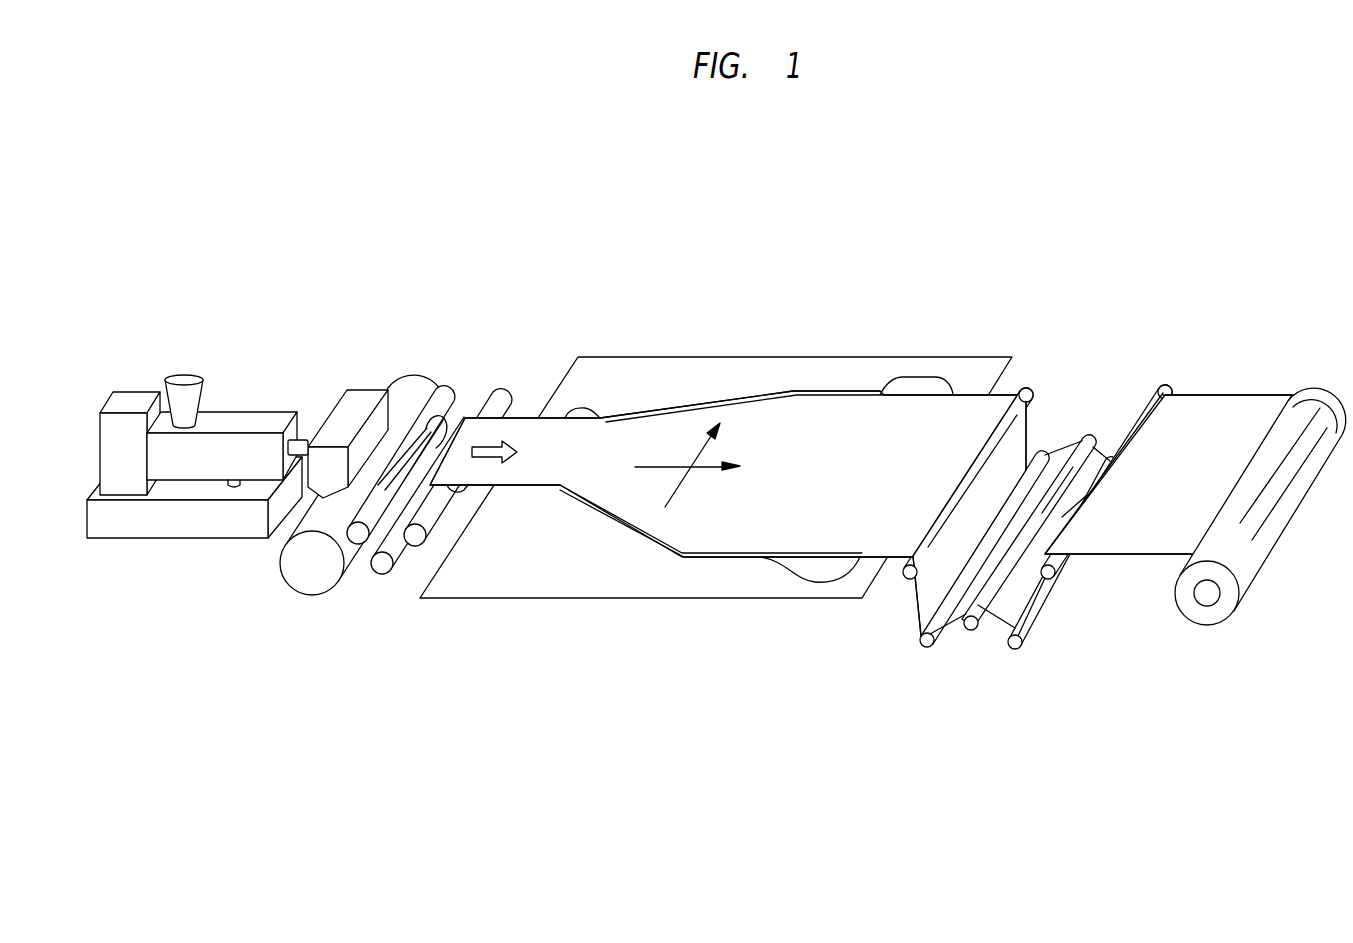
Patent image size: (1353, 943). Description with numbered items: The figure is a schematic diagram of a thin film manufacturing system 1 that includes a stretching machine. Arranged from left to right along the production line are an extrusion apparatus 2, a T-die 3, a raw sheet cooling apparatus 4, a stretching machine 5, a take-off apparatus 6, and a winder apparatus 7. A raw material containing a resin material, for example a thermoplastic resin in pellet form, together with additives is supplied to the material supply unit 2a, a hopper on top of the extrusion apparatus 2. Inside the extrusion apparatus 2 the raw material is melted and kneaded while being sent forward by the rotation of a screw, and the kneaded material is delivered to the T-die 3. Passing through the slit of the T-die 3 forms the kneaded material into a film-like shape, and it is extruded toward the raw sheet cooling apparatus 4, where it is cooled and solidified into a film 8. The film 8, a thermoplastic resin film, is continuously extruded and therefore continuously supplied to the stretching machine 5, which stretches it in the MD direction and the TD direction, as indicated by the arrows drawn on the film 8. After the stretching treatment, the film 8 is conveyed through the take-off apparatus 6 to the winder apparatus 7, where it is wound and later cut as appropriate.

The thin film manufacturing system 1 is at (604, 259).
The extrusion apparatus 2 is at (197, 460).
The material supply unit 2a is at (183, 378).
The T-die 3 is at (351, 418).
The raw sheet cooling apparatus 4 is at (314, 582).
The stretching machine 5 is at (580, 334).
The take-off apparatus 6 is at (1081, 349).
The winder apparatus 7 is at (1207, 613).
The film 8 is at (777, 428).